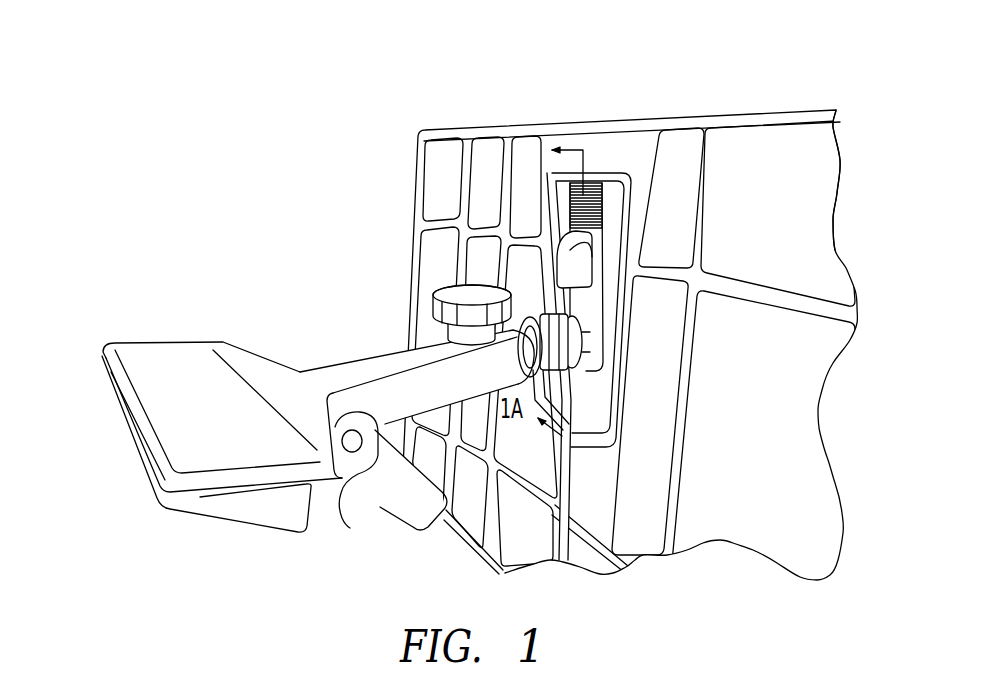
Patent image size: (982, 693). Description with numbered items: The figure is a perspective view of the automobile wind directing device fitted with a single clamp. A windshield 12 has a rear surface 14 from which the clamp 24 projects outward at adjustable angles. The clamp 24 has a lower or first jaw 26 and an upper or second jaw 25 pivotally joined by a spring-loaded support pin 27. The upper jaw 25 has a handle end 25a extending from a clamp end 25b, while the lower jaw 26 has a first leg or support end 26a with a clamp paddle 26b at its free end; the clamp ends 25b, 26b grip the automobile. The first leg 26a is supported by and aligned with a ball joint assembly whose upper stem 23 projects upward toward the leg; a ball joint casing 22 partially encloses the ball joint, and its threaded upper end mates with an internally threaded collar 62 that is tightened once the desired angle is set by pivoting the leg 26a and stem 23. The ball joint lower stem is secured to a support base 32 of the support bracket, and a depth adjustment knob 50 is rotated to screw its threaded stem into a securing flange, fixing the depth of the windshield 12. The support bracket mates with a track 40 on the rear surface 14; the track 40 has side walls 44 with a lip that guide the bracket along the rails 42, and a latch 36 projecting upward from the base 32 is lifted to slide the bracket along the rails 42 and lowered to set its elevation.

The windshield 12 is at (633, 332).
The rear surface 14 is at (832, 218).
The ball joint casing 22 is at (736, 438).
The upper stem 23 is at (535, 382).
The clamp 24 is at (313, 445).
The second jaw 25 is at (426, 518).
The handle end 25a is at (436, 530).
The clamp end 25b is at (217, 500).
The first jaw 26 is at (426, 400).
The first leg 26a is at (425, 418).
The clamp paddle 26b is at (141, 352).
The support pin 27 is at (350, 528).
The support base 32 is at (747, 241).
The latch 36 is at (590, 260).
The track 40 is at (619, 312).
The track rails 42 is at (588, 183).
The side wall 44 is at (631, 200).
The depth adjustment knob 50 is at (437, 287).
The internally threaded collar 62 is at (523, 316).